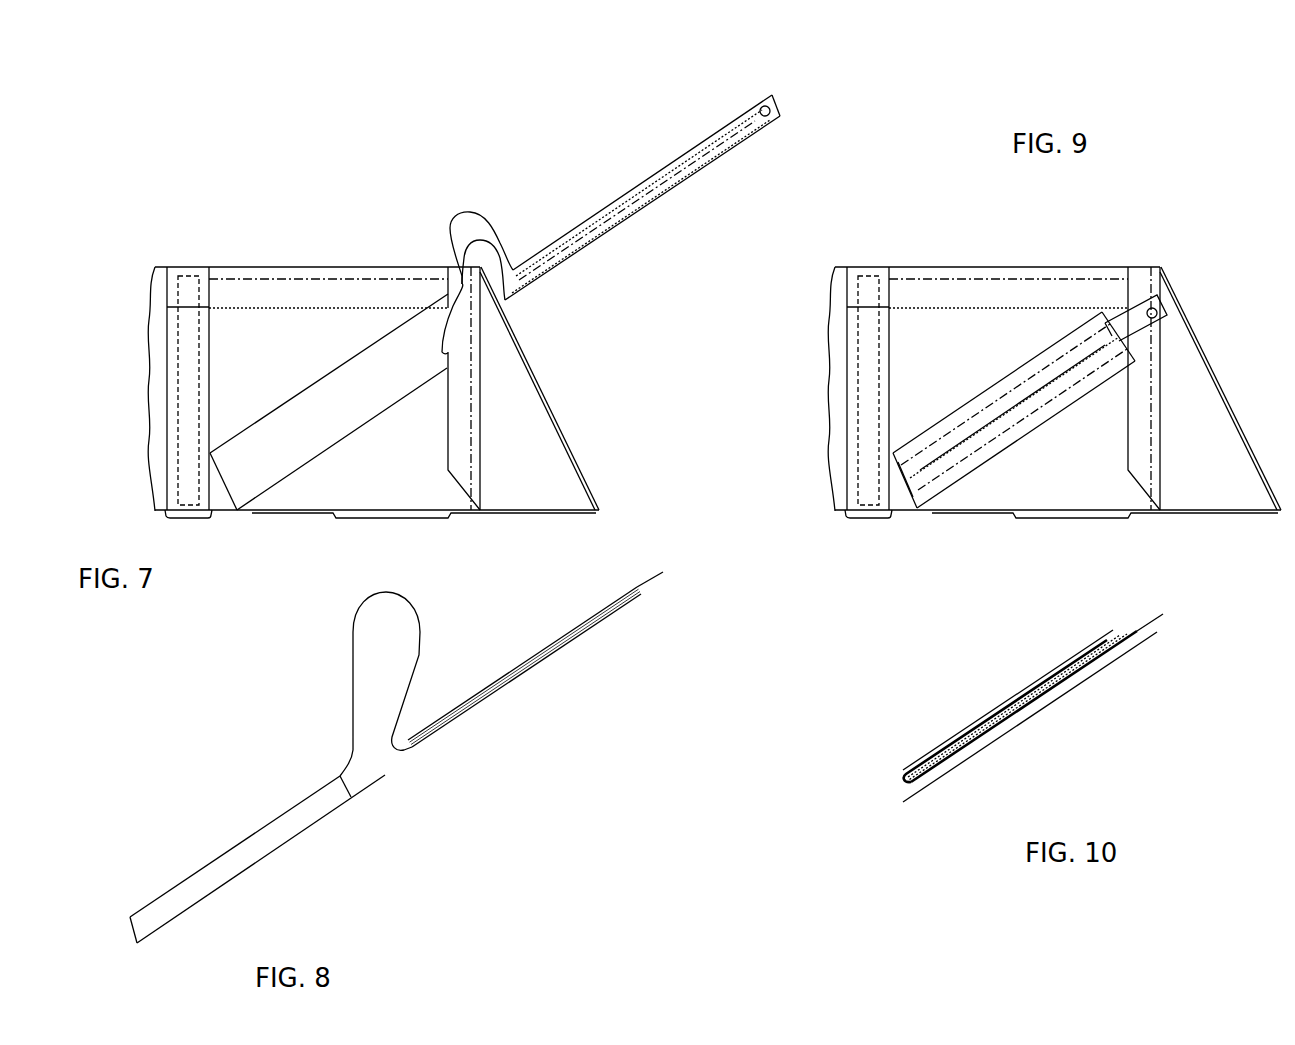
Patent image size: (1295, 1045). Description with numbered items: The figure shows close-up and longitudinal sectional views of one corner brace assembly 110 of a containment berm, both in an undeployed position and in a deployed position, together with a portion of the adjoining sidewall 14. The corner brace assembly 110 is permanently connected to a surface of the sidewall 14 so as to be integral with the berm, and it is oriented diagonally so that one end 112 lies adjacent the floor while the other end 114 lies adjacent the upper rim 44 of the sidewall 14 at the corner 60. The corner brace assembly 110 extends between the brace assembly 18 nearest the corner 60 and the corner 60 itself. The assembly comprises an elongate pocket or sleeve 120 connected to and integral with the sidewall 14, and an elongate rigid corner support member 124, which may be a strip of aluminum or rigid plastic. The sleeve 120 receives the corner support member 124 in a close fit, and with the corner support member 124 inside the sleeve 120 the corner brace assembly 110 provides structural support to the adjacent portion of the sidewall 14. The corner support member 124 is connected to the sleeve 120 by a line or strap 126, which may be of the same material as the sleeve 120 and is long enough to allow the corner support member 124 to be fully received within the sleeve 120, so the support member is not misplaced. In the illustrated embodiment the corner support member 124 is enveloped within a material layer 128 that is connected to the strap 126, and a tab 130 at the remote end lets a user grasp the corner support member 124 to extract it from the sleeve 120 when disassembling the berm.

In FIG. 7, the sidewall 14 is at (427, 465).
In FIG. 9, the sidewall 14 is at (1112, 447).
In FIG. 7, the brace assembly 18 is at (175, 358).
In FIG. 9, the brace assembly 18 is at (857, 327).
In FIG. 7, the upper rim 44 is at (300, 263).
In FIG. 9, the upper rim 44 is at (900, 268).
In FIG. 7, the corner 60 is at (473, 357).
In FIG. 9, the corner 60 is at (1162, 268).
In FIG. 7, the corner brace assembly 110 is at (288, 400).
In FIG. 9, the corner brace assembly 110 is at (1010, 360).
In FIG. 7, the end of corner brace assembly 112 is at (230, 494).
In FIG. 9, the end of corner brace assembly 112 is at (908, 504).
In FIG. 8, the end of corner brace assembly 112 is at (137, 938).
In FIG. 7, the other end of corner brace assembly 114 is at (428, 318).
In FIG. 9, the other end of corner brace assembly 114 is at (1110, 320).
In FIG. 8, the other end of corner brace assembly 114 is at (353, 796).
In FIG. 8, the sleeve 120 is at (180, 893).
In FIG. 10, the sleeve 120 is at (977, 723).
In FIG. 7, the corner support member 124 is at (676, 166).
In FIG. 9, the corner support member 124 is at (987, 447).
In FIG. 8, the corner support member 124 is at (534, 666).
In FIG. 10, the corner support member 124 is at (1127, 632).
In FIG. 7, the strap 126 is at (474, 214).
In FIG. 8, the strap 126 is at (418, 615).
In FIG. 10, the strap 126 is at (1072, 660).
In FIG. 8, the material layer 128 is at (563, 632).
In FIG. 7, the tab 130 is at (767, 104).
In FIG. 9, the tab 130 is at (1150, 326).
In FIG. 8, the tab 130 is at (645, 588).
In FIG. 10, the tab 130 is at (1163, 614).